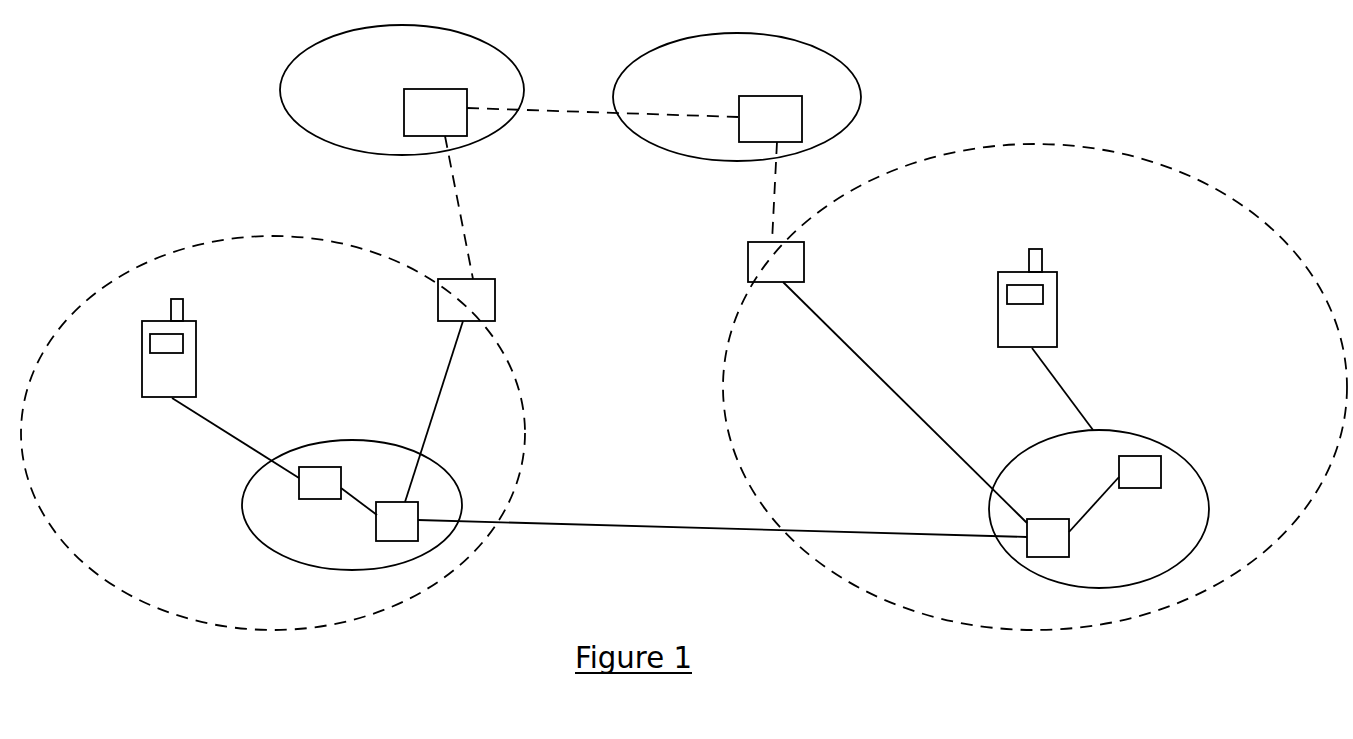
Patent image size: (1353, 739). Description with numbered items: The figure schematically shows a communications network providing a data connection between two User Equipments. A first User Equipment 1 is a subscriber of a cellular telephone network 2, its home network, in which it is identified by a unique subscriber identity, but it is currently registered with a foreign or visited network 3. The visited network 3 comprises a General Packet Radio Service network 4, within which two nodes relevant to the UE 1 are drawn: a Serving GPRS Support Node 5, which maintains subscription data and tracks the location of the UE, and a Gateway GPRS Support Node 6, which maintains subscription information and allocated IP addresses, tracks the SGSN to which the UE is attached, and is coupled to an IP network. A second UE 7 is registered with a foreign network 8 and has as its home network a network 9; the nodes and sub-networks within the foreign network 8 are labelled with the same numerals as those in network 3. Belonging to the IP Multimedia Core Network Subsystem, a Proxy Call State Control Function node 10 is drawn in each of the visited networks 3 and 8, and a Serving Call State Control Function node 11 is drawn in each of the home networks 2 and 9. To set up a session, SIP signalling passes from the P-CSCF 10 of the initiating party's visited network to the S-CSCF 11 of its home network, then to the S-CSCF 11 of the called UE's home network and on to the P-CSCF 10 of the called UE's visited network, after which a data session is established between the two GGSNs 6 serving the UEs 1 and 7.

The User Equipment 1 is at (196, 372).
The cellular telephone network 2 is at (288, 113).
The visited network 3 is at (355, 622).
The General Packet Radio Service network 4 is at (384, 443).
The Serving GPRS Support Node 5 is at (330, 500).
The Gateway GPRS Support Node 6 is at (393, 503).
The second UE 7 is at (1057, 327).
The foreign network 8 is at (1176, 615).
The home network 9 is at (841, 60).
The Proxy Call State Control Function node 10 is at (438, 300).
The Serving Call State Control Function node 11 is at (404, 104).